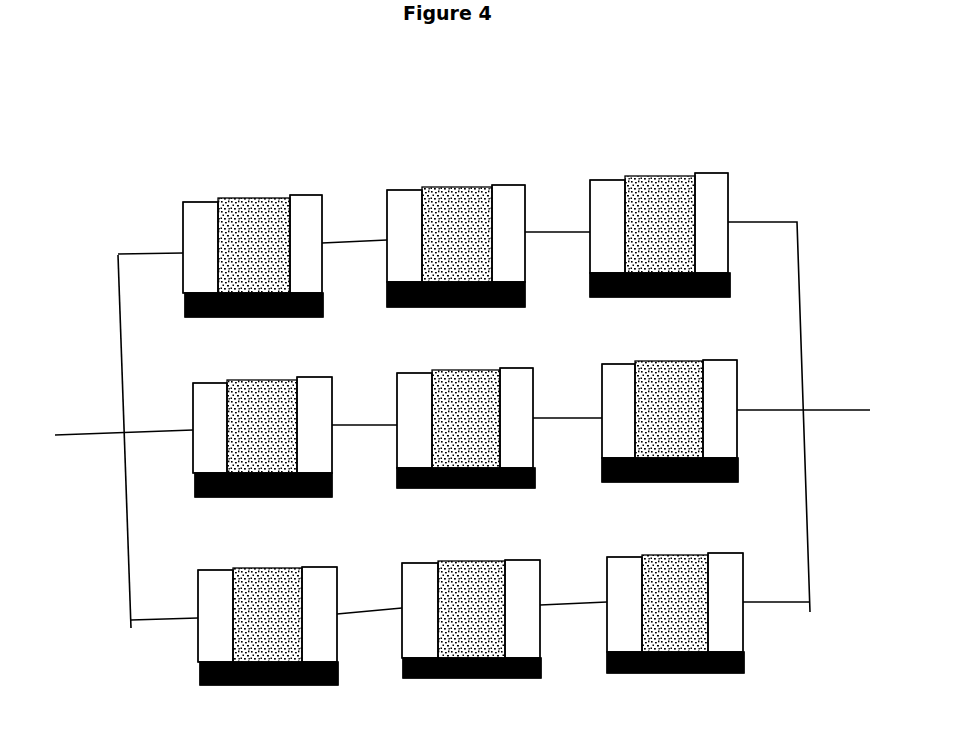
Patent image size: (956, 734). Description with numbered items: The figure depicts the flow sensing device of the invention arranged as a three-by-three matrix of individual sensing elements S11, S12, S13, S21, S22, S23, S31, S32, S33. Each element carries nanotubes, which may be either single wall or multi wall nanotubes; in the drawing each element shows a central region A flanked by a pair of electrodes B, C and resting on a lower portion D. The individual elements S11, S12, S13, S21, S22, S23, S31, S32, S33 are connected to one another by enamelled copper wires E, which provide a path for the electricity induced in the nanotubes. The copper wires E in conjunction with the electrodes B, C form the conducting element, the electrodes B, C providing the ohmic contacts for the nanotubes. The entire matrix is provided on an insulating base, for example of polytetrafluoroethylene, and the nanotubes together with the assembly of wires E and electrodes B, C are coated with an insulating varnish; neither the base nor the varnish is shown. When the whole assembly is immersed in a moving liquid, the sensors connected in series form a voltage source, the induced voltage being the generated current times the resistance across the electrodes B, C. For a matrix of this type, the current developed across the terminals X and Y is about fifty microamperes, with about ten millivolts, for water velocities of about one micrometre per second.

The individual element S11 is at (253, 248).
The individual element S12 is at (456, 238).
The individual element S13 is at (660, 227).
The individual element S21 is at (245, 433).
The individual element S22 is at (447, 424).
The individual element S23 is at (655, 416).
The individual element S31 is at (252, 617).
The individual element S32 is at (459, 610).
The individual element S33 is at (656, 606).
The switching layer A is at (463, 419).
The electrode B is at (516, 417).
The electrode C is at (412, 421).
The base substrate D is at (464, 500).
The enamelled copper wire E is at (454, 414).
The terminal X is at (114, 442).
The terminal Y is at (816, 410).